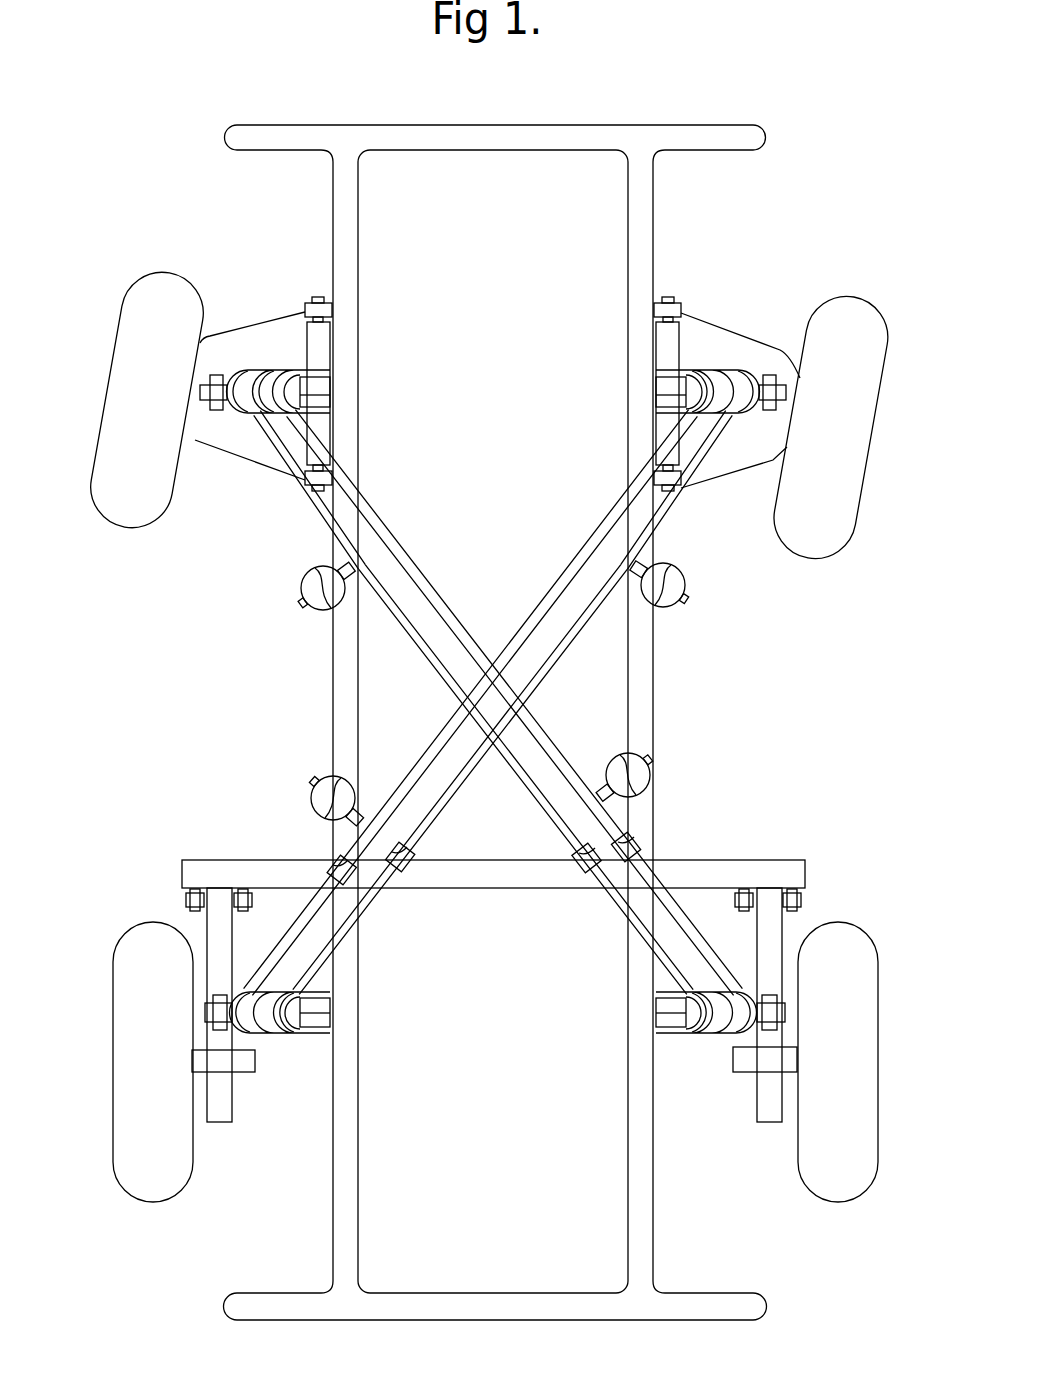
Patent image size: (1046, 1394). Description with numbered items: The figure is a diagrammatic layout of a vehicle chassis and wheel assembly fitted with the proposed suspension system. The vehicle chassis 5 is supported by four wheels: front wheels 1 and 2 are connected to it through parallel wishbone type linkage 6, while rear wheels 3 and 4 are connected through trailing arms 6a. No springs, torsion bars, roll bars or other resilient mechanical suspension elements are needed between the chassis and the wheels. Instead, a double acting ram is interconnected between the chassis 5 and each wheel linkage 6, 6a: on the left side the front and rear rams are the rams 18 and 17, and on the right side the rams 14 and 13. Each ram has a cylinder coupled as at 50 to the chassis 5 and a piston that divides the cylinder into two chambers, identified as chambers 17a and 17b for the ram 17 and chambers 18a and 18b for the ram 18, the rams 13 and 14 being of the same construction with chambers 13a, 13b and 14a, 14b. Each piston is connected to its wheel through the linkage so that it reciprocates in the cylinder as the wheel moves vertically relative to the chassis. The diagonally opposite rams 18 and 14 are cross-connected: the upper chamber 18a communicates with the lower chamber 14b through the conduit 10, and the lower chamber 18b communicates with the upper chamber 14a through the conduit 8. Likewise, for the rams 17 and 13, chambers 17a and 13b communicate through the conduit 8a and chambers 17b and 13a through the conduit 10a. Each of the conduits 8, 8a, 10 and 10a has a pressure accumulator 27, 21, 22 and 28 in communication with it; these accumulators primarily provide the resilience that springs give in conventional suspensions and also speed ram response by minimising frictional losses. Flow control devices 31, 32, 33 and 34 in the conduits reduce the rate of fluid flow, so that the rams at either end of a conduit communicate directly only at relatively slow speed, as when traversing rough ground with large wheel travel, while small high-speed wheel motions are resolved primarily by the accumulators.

The front wheel 1 is at (135, 420).
The front wheel 2 is at (851, 478).
The rear wheel 3 is at (877, 1058).
The rear wheel 4 is at (112, 1065).
The vehicle chassis 5 is at (330, 665).
The parallel wishbone type linkage 6 is at (262, 318).
The trailing arm 6a is at (213, 943).
The conduit 8 is at (420, 647).
The conduit 8a is at (547, 657).
The conduit 10 is at (390, 533).
The conduit 10a is at (590, 527).
The double acting ram 13 is at (688, 365).
The ram chamber 13a is at (698, 410).
The ram chamber 13b is at (738, 413).
The double acting ram 14 is at (690, 977).
The upper chamber 14a is at (700, 1032).
The lower chamber 14b is at (732, 1037).
The double acting ram 17 is at (327, 1038).
The ram chamber 17a is at (290, 1037).
The ram chamber 17b is at (250, 1035).
The double acting ram 18 is at (290, 368).
The upper chamber 18a is at (283, 405).
The lower chamber 18b is at (247, 407).
The pressure accumulator 21 is at (686, 587).
The pressure accumulator 22 is at (652, 771).
The pressure accumulator 27 is at (299, 590).
The pressure accumulator 28 is at (309, 795).
The flow control device 31 is at (328, 858).
The flow control device 32 is at (403, 870).
The flow control device 33 is at (640, 842).
The flow control device 34 is at (575, 873).
The cylinder coupling 50 is at (333, 390).